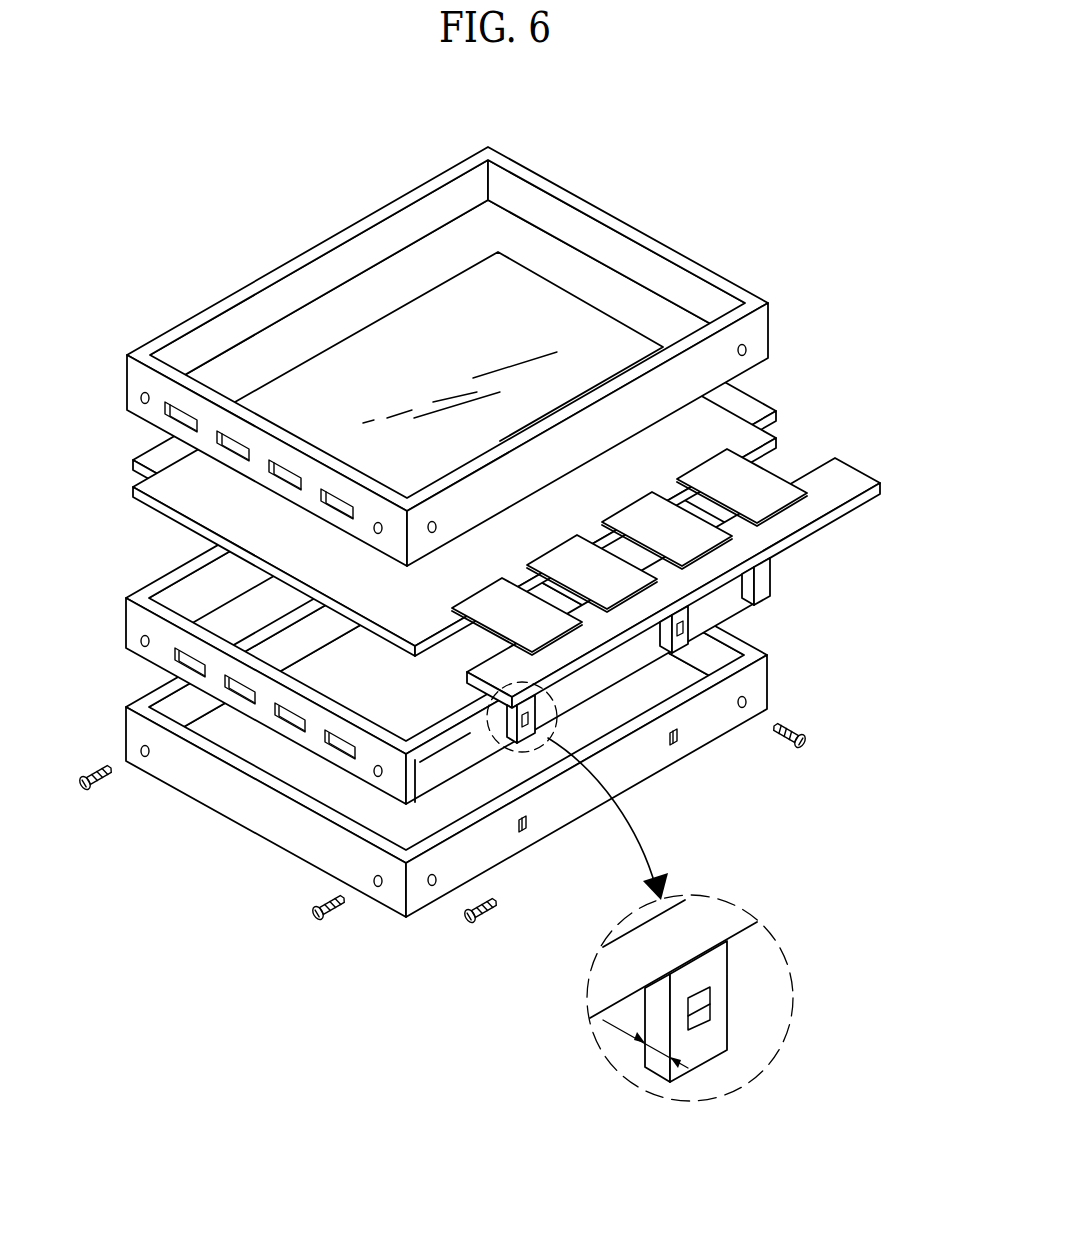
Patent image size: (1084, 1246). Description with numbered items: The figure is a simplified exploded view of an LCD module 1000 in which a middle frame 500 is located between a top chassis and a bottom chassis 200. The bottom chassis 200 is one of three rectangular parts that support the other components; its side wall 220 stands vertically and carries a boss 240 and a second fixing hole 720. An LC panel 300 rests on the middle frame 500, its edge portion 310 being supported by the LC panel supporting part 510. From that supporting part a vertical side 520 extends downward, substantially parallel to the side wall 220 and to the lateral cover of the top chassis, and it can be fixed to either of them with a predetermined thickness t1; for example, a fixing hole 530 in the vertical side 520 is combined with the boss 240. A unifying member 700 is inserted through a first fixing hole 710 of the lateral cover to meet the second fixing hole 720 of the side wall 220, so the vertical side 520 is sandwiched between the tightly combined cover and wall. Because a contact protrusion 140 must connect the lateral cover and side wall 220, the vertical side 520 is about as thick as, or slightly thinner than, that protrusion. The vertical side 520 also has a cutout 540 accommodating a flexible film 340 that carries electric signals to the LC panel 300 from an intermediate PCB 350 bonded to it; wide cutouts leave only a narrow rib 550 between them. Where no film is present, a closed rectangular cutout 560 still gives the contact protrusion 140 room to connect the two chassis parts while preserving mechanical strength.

The LCD module 1000 is at (752, 112).
The contact protrusion 140 is at (166, 430).
The bottom chassis 200 is at (446, 730).
The side wall 220 is at (233, 798).
The boss 240 is at (530, 824).
The LC panel 300 is at (529, 497).
The edge portion 310 is at (762, 398).
The flexible film 340 is at (757, 481).
The intermediate PCB 350 is at (860, 478).
The middle frame 500 is at (408, 646).
The LC panel supporting part 510 is at (130, 609).
The vertical side 520 is at (414, 782).
The fixing hole 530 is at (705, 1003).
The cutout 540 is at (449, 764).
The narrow rib 550 is at (700, 1040).
The cutout 560 is at (340, 742).
The unifying member 700 is at (315, 914).
The first fixing hole 710 is at (133, 400).
The second fixing hole 720 is at (376, 887).
The thickness t1 is at (645, 1044).